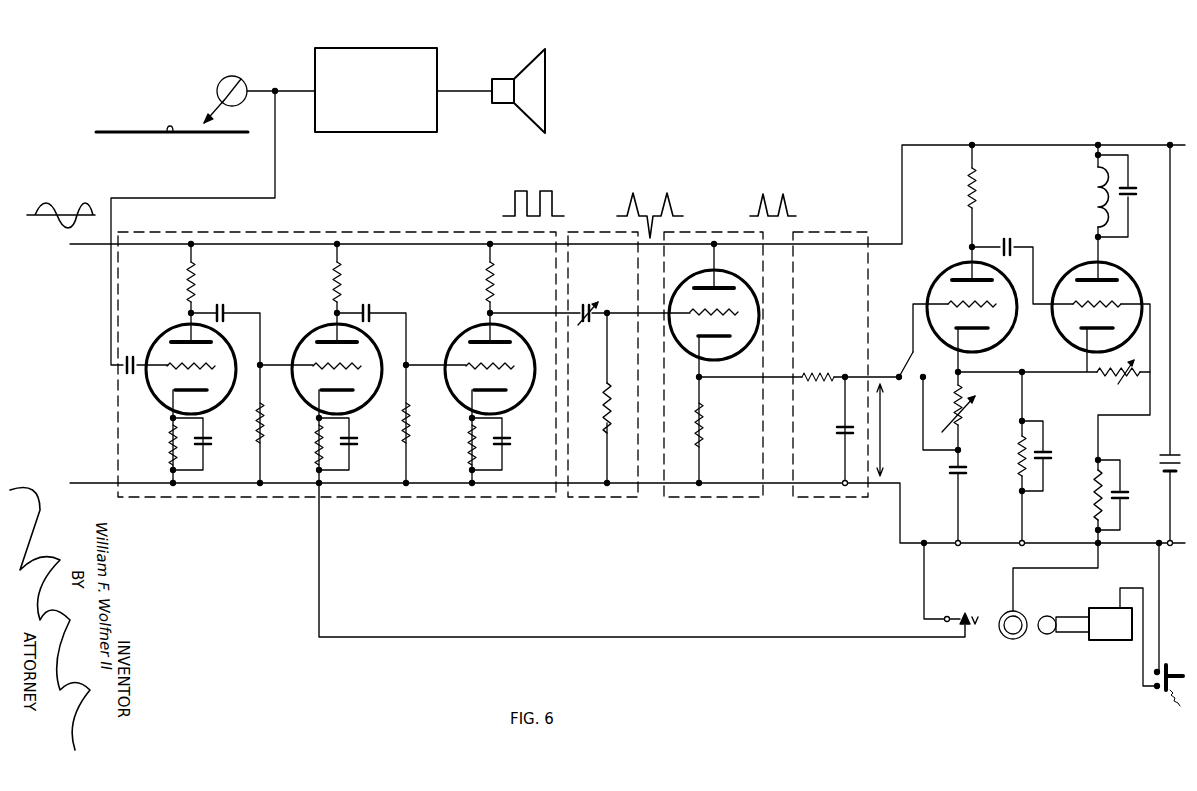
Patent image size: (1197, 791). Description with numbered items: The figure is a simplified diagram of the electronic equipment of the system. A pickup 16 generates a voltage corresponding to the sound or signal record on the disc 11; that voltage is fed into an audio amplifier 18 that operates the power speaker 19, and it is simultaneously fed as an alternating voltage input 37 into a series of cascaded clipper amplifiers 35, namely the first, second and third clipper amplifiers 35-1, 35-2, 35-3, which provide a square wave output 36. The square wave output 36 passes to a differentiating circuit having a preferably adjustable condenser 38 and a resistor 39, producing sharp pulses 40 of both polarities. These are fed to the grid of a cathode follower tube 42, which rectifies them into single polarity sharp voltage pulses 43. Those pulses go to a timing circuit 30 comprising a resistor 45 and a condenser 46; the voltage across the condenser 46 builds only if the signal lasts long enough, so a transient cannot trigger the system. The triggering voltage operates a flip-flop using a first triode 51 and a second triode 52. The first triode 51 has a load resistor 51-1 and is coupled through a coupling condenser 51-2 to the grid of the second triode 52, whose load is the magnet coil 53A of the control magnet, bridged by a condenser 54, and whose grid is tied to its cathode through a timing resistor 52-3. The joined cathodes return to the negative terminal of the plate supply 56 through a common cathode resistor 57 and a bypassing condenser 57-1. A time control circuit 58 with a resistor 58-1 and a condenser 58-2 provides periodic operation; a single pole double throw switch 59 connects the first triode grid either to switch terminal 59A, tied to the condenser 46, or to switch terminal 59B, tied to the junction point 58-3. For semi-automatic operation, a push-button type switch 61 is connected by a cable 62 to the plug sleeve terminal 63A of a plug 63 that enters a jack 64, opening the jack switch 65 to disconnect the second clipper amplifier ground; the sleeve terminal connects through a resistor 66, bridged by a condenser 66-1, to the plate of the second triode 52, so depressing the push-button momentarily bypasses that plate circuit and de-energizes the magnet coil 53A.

The disc 11 is at (135, 127).
The pickup 16 is at (241, 81).
The audio amplifier 18 is at (391, 48).
The power speaker 19 is at (523, 68).
The alternating voltage input 37 is at (77, 208).
The clipper amplifiers 35 is at (395, 230).
The first clipper amplifier 35-1 is at (170, 322).
The second clipper amplifier 35-2 is at (316, 322).
The third clipper amplifier 35-3 is at (470, 322).
The square wave output 36 is at (507, 208).
The condenser 38 is at (592, 309).
The resistor 39 is at (602, 419).
The sharp pulses 40 is at (642, 211).
The cathode follower tube 42 is at (706, 230).
The sharp voltage pulses 43 is at (788, 199).
The timing circuit 30 is at (834, 232).
The resistor 45 is at (819, 376).
The condenser 46 is at (841, 438).
The first triode 51 is at (957, 266).
The load resistor 51-1 is at (970, 192).
The coupling condenser 51-2 is at (1011, 244).
The second triode 52 is at (1080, 266).
The timing resistor 52-3 is at (1123, 380).
The magnet coil 53A is at (1090, 198).
The condenser 54 is at (1133, 191).
The plate supply 56 is at (1163, 454).
The common cathode resistor 57 is at (1020, 449).
The bypassing condenser 57-1 is at (1053, 461).
The time control circuit 58 is at (967, 459).
The resistor 58-1 is at (967, 398).
The condenser 58-2 is at (958, 476).
The junction point 58-3 is at (966, 450).
The single pole double throw switch 59 is at (908, 370).
The switch terminal 59A is at (901, 380).
The switch terminal 59B is at (921, 375).
The push-button type switch 61 is at (1164, 625).
The cable 62 is at (1119, 589).
The plug 63 is at (1085, 625).
The plug sleeve terminal 63A is at (1101, 608).
The jack 64 is at (1014, 642).
The jack switch 65 is at (975, 628).
The resistor 66 is at (1097, 502).
The condenser 66-1 is at (1131, 494).